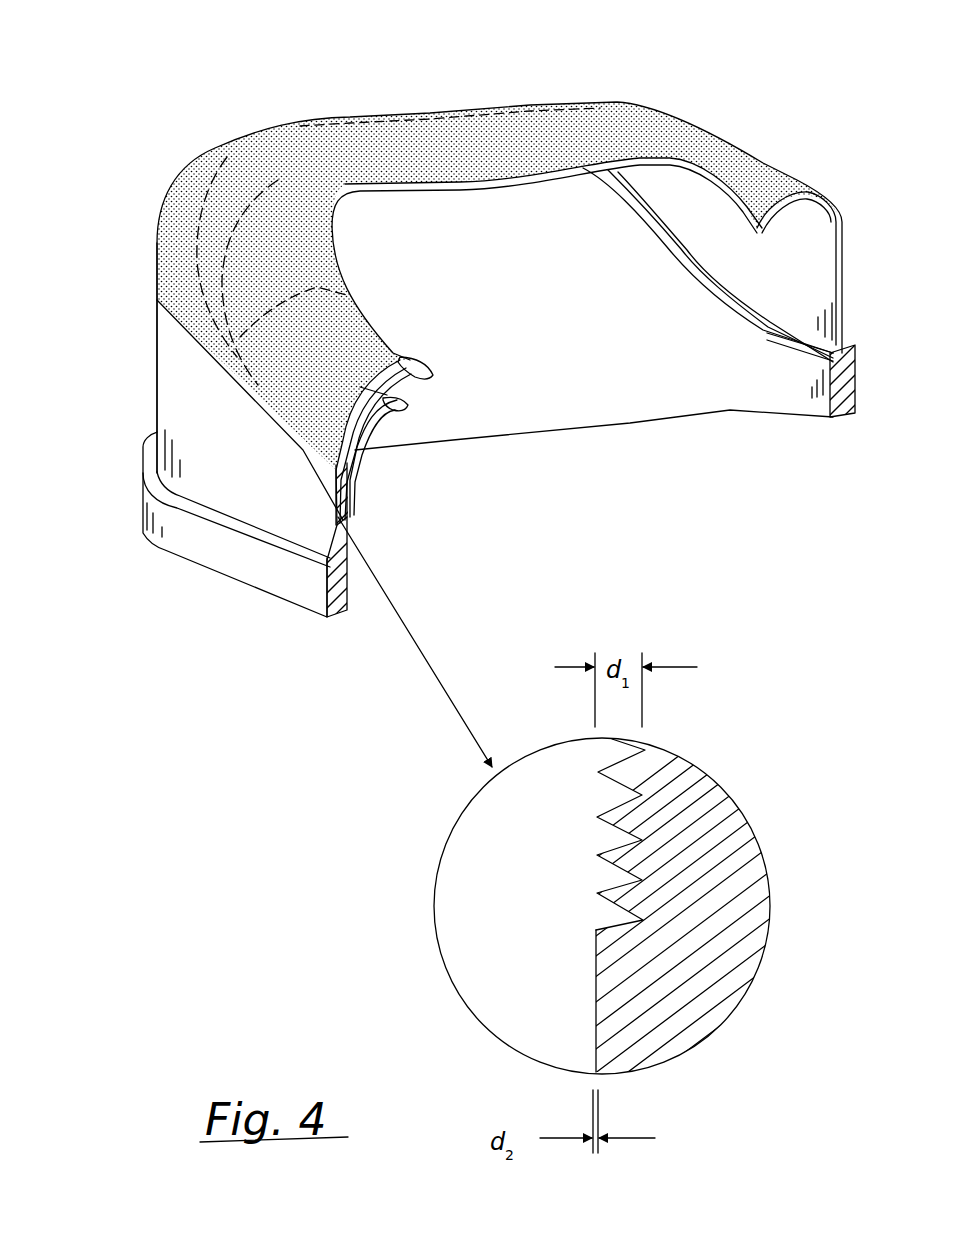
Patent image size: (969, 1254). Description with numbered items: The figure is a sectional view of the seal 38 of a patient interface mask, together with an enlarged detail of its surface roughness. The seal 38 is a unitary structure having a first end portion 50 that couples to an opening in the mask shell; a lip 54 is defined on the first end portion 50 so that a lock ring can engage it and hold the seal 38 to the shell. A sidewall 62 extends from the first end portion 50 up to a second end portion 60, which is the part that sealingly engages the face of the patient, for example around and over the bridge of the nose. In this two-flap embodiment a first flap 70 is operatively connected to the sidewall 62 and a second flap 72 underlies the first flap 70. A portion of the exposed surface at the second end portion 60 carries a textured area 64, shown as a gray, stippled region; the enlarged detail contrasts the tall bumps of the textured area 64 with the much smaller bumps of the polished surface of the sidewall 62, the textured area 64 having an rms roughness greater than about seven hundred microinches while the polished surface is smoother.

The seal 38 is at (634, 397).
The first end portion 50 is at (285, 593).
The lip 54 is at (240, 527).
The second end portion 60 is at (411, 130).
The sidewall 62 is at (165, 387).
The textured area 64 is at (286, 177).
The first flap 70 is at (423, 367).
The second flap 72 is at (410, 408).